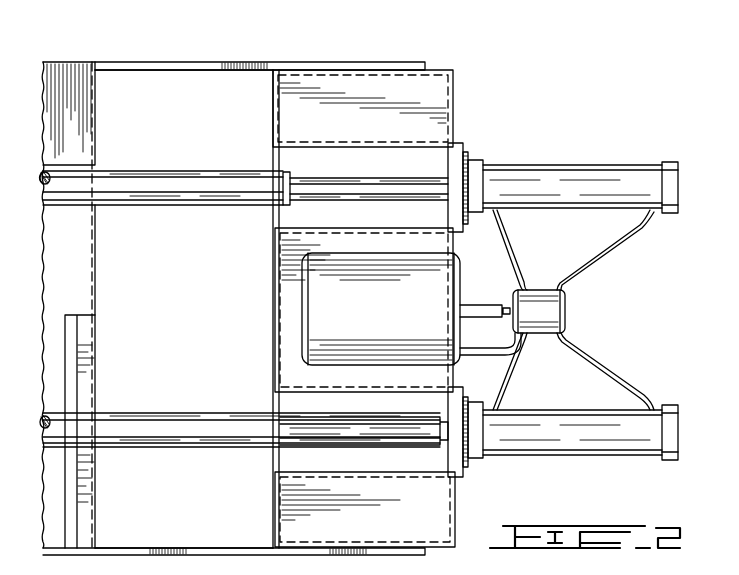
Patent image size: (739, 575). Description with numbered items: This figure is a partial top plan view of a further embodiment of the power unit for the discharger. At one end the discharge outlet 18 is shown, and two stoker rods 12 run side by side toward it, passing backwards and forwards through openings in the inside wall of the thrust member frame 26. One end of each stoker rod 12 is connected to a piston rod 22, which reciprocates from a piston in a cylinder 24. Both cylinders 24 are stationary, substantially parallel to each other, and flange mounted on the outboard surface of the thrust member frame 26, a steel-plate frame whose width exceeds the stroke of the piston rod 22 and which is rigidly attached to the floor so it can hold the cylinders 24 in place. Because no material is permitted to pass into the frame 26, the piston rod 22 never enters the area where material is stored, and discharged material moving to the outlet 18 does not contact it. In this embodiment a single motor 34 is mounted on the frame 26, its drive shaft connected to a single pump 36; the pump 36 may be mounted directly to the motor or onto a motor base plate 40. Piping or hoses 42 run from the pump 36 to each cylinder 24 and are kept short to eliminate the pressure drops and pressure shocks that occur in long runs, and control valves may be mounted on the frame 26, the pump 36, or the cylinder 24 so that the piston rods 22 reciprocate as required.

The stoker rod 12 is at (197, 192).
The discharge outlet 18 is at (157, 88).
The piston rod 22 is at (360, 185).
The cylinder 24 is at (560, 175).
The thrust member frame 26 is at (445, 525).
The motor 34 is at (440, 297).
The pump 36 is at (560, 300).
The motor base plate 40 is at (290, 283).
The hoses 42 is at (583, 257).